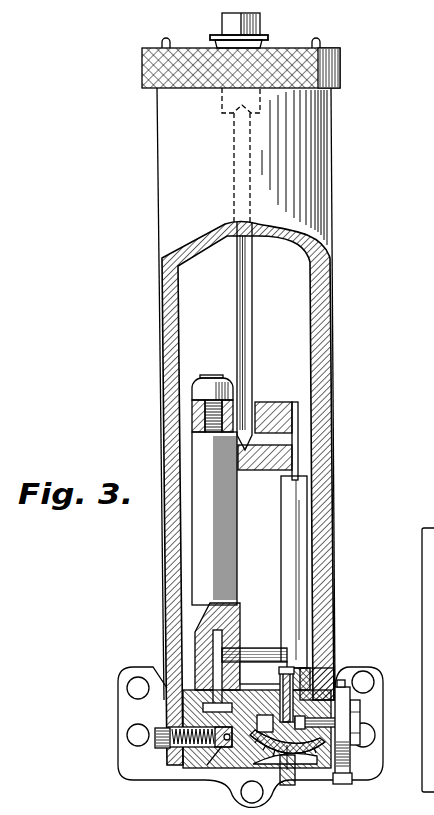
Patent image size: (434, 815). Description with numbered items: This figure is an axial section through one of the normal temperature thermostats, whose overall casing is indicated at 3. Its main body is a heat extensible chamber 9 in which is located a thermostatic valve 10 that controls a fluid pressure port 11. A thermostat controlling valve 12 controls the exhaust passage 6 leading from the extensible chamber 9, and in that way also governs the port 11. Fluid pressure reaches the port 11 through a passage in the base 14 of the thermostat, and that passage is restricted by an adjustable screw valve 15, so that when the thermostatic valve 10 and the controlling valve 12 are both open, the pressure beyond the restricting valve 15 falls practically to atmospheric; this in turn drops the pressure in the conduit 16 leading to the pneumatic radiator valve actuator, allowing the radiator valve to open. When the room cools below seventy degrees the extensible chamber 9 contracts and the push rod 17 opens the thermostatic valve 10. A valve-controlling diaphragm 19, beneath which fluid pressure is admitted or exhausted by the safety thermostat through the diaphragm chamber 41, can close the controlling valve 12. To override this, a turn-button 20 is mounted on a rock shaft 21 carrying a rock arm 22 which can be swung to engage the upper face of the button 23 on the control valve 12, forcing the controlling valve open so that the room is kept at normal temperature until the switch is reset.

The outer casing 3 is at (334, 391).
The exhaust passage 6 is at (312, 658).
The heat extensible chamber 9 is at (334, 506).
The thermostatic valve 10 is at (334, 618).
The fluid pressure port 11 is at (262, 655).
The thermostat controlling valve 12 is at (306, 692).
The base 14 is at (185, 762).
The adjustable screw valve 15 is at (158, 739).
The conduit 16 is at (224, 745).
The push rod 17 is at (248, 320).
The valve-controlling diaphragm 19 is at (293, 764).
The turn-button 20 is at (360, 714).
The rock shaft 21 is at (338, 713).
The rock arm 22 is at (346, 678).
The button 23 is at (254, 666).
The diaphragm chamber 41 is at (287, 772).